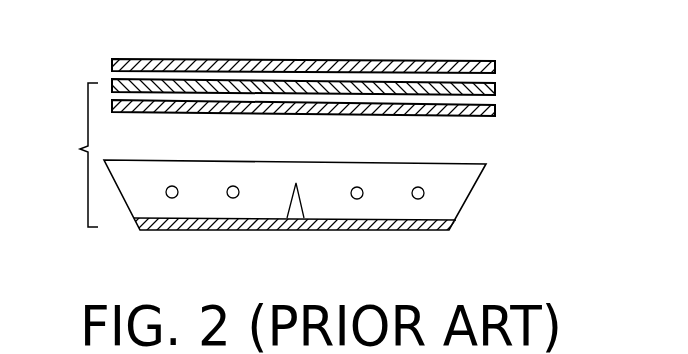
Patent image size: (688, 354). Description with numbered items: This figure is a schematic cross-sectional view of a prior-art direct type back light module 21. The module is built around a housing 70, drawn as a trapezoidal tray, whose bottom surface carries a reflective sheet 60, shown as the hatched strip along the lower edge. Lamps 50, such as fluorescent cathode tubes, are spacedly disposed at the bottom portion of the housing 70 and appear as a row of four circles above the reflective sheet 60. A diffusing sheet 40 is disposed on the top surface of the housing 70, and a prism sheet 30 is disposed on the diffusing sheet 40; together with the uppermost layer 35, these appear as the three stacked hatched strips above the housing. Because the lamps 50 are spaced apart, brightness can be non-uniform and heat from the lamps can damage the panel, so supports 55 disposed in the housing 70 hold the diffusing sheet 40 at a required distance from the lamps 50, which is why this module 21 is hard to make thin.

The back light module 21 is at (71, 155).
The prism sheet 30 is at (258, 80).
The top layer 35 is at (307, 62).
The diffusing sheet 40 is at (380, 98).
The lamps 50 is at (227, 193).
The supports 55 is at (294, 212).
The reflective sheet 60 is at (433, 231).
The housing 70 is at (476, 202).